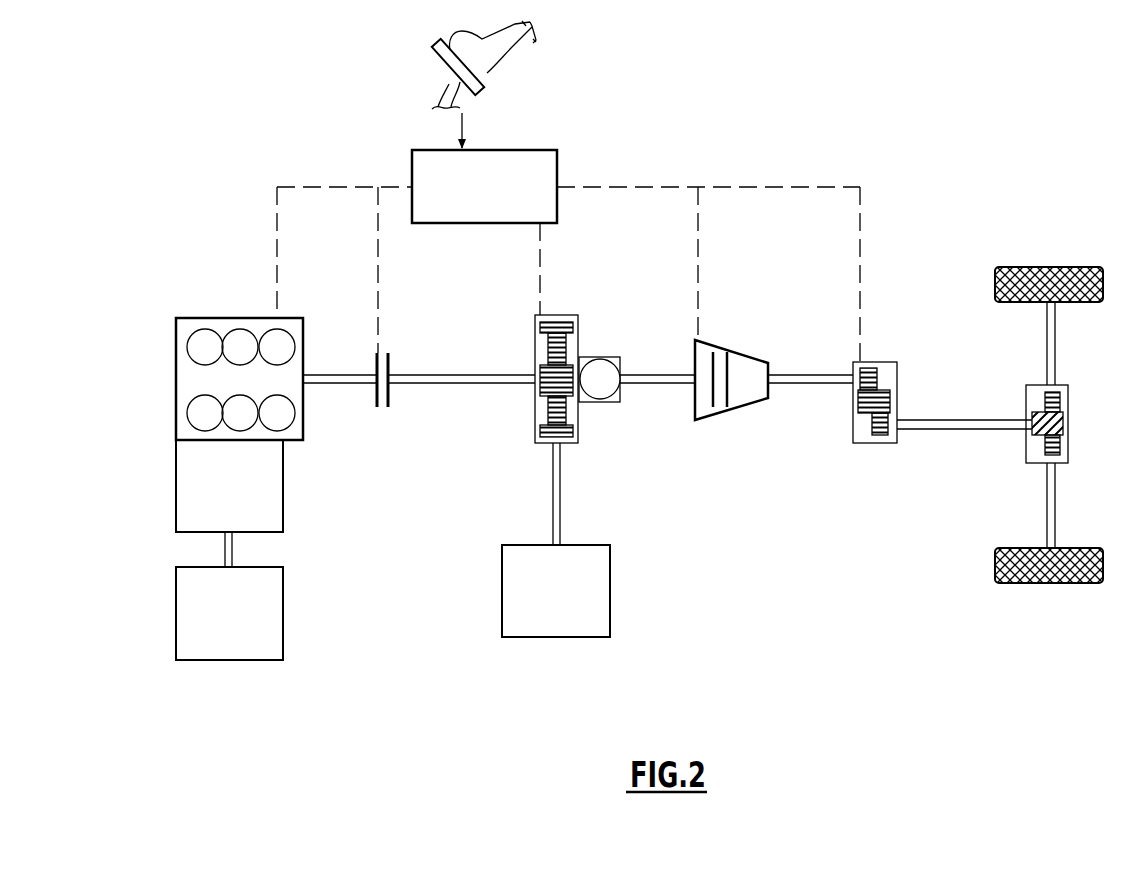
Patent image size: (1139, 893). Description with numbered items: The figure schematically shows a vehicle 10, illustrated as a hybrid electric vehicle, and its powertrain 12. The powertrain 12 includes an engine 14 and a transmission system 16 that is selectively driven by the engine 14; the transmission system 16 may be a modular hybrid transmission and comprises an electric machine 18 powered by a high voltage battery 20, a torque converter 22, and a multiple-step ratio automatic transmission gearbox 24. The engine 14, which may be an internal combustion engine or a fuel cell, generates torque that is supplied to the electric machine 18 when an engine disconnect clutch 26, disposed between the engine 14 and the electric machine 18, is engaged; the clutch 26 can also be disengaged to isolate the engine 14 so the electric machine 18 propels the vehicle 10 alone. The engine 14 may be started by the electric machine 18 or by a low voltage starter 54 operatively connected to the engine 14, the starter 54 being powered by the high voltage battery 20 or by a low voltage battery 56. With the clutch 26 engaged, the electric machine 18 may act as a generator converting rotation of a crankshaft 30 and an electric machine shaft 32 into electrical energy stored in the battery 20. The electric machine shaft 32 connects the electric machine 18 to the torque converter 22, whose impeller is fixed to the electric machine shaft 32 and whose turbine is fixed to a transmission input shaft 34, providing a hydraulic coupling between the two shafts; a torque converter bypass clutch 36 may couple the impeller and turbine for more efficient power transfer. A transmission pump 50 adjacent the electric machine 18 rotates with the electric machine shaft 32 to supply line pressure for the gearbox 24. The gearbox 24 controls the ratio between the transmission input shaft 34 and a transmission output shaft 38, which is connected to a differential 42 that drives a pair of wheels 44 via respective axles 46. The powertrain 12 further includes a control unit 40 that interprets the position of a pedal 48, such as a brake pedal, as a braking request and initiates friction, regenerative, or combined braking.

The vehicle 10 is at (646, 87).
The powertrain 12 is at (449, 418).
The engine 14 is at (237, 314).
The transmission system 16 is at (898, 210).
The electric machine 18 is at (560, 312).
The high voltage battery 20 is at (502, 570).
The torque converter 22 is at (732, 343).
The transmission gearbox 24 is at (884, 358).
The engine disconnect clutch 26 is at (386, 350).
The crankshaft 30 is at (320, 374).
The electric machine shaft 32 is at (433, 374).
The transmission input shaft 34 is at (808, 374).
The torque converter bypass clutch 36 is at (716, 350).
The transmission output shaft 38 is at (942, 430).
The control unit 40 is at (557, 167).
The differential 42 is at (1064, 423).
The wheels 44 is at (1067, 583).
The axles 46 is at (1057, 355).
The pedal 48 is at (437, 52).
The transmission pump 50 is at (605, 353).
The low voltage starter 54 is at (284, 492).
The low voltage battery 56 is at (284, 616).